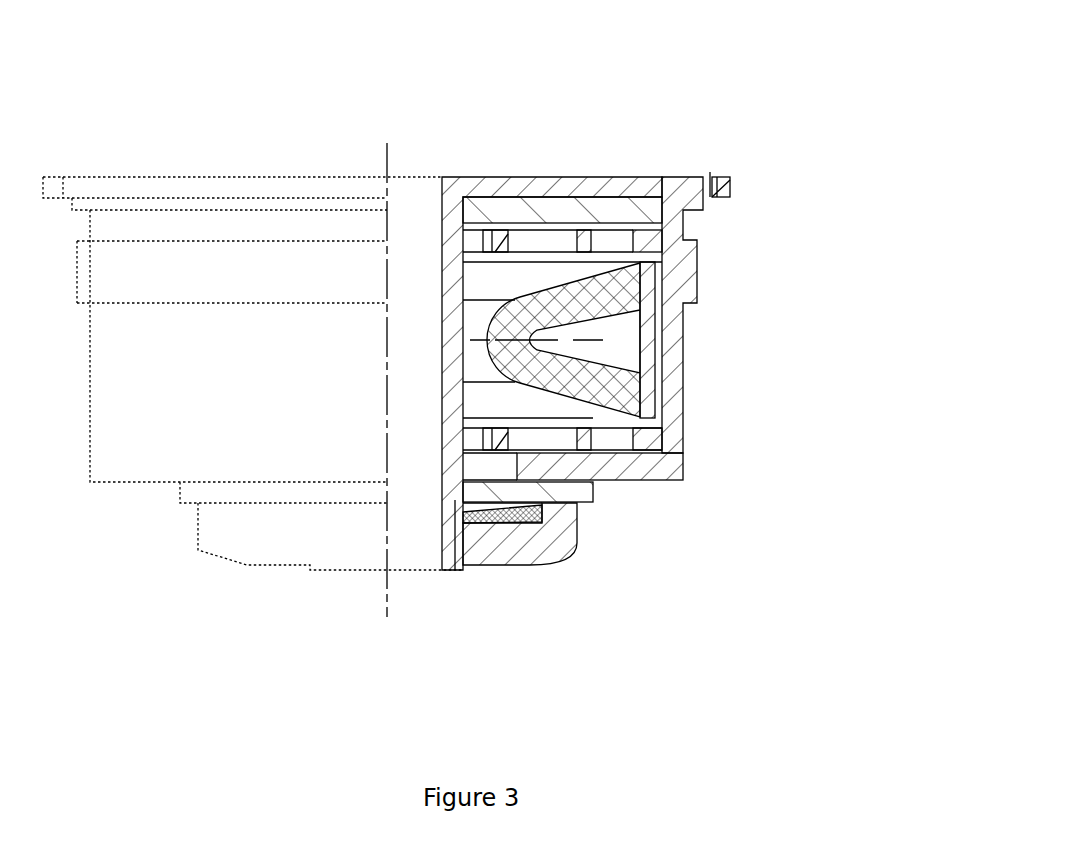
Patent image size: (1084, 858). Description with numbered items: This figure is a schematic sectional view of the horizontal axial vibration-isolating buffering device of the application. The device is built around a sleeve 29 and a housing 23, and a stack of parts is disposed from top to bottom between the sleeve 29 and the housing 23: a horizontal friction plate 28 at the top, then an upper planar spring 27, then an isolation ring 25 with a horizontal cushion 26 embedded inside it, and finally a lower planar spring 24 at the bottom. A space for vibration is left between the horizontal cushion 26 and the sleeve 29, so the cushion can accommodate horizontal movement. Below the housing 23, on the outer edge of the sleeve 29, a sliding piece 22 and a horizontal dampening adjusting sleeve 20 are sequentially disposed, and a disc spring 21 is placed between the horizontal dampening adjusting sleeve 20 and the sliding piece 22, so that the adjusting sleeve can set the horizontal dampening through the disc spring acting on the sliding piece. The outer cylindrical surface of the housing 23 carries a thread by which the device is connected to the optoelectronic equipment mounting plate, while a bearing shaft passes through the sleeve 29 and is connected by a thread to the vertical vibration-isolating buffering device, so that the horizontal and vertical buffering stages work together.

The horizontal dampening adjusting sleeve 20 is at (518, 542).
The disc spring 21 is at (495, 517).
The sliding piece 22 is at (553, 493).
The housing 23 is at (613, 470).
The lower planar spring 24 is at (583, 440).
The isolation ring 25 is at (650, 342).
The horizontal cushion 26 is at (568, 305).
The upper planar spring 27 is at (583, 242).
The horizontal friction plate 28 is at (600, 213).
The sleeve 29 is at (565, 185).